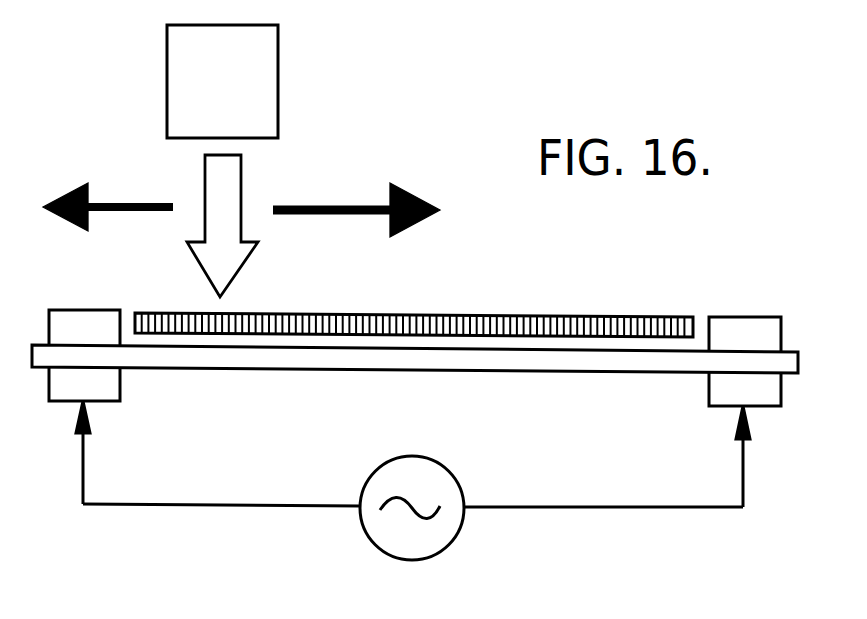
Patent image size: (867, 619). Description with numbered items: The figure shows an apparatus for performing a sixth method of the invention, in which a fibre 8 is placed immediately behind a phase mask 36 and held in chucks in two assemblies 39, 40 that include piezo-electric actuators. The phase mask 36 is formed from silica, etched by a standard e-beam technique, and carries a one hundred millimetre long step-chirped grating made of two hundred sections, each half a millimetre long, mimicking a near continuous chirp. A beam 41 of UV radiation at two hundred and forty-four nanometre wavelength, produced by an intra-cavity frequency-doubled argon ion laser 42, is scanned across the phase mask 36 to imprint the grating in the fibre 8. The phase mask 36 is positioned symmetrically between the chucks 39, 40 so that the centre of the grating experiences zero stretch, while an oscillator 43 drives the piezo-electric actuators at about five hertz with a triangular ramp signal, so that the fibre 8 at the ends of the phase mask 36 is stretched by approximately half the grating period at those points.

The laser 42 is at (200, 73).
The beam 41 is at (225, 182).
The chuck assembly 39 is at (107, 386).
The chuck assembly 40 is at (763, 392).
The fibre 8 is at (638, 363).
The phase mask 36 is at (587, 314).
The oscillator 43 is at (440, 488).